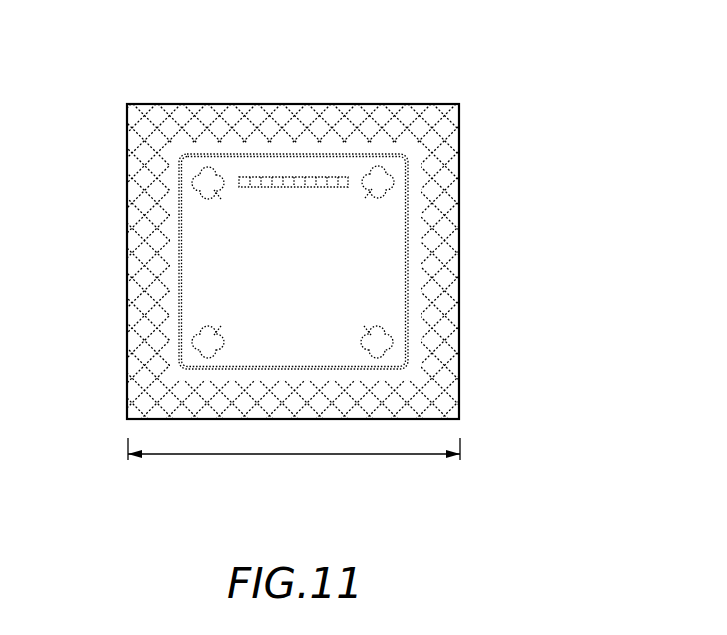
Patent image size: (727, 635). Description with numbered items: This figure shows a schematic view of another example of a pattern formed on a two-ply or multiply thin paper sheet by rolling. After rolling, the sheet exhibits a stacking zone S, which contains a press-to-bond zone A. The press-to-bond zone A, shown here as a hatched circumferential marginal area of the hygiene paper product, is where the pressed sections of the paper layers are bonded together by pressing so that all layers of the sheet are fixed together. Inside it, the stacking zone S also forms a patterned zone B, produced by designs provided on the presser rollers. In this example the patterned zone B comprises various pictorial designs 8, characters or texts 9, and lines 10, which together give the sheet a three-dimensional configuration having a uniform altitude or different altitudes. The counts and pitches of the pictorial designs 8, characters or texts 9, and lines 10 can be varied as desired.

The figures 8 is at (381, 170).
The characters or texts 9 is at (302, 178).
The lines 10 is at (410, 341).
The press-to-bond zone A is at (448, 127).
The patterned zone B is at (303, 189).
The stacking zone S is at (303, 455).